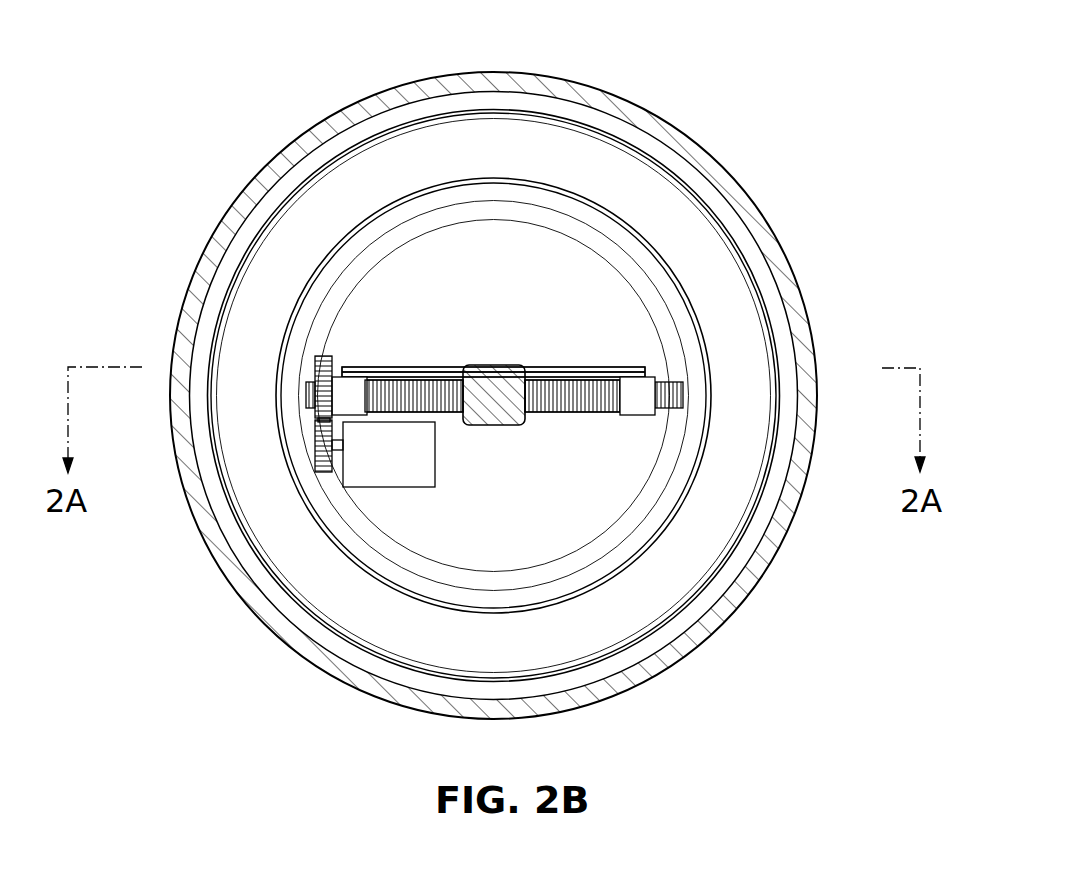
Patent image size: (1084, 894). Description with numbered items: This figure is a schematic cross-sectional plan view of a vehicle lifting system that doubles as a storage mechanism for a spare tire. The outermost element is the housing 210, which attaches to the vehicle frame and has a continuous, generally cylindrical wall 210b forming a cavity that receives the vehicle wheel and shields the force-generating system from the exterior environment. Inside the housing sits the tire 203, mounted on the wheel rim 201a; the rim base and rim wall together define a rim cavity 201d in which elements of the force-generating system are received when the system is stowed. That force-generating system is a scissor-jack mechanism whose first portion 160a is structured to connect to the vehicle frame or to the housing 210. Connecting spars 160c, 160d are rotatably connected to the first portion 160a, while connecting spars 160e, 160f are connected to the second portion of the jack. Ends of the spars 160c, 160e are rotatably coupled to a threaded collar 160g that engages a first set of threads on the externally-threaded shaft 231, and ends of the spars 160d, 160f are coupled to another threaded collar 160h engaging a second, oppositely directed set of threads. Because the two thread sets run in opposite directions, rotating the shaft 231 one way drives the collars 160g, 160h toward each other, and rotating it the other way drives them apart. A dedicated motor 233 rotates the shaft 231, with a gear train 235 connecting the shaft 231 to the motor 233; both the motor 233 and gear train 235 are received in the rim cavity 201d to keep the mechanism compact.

The housing 210 is at (695, 648).
The wall 210b is at (380, 682).
The tire 203 is at (576, 162).
The wheel rim 201a is at (697, 473).
The rim cavity 201d is at (593, 270).
The connecting spar 160d is at (398, 367).
The connecting spar 160f is at (493, 372).
The externally-threaded shaft 231 is at (568, 378).
The connecting spar 160c is at (603, 367).
The connecting spar 160e is at (492, 396).
The first portion 160a is at (491, 365).
The threaded collar 160g is at (639, 400).
The threaded collar 160h is at (352, 383).
The gear train 235 is at (318, 447).
The motor 233 is at (382, 457).